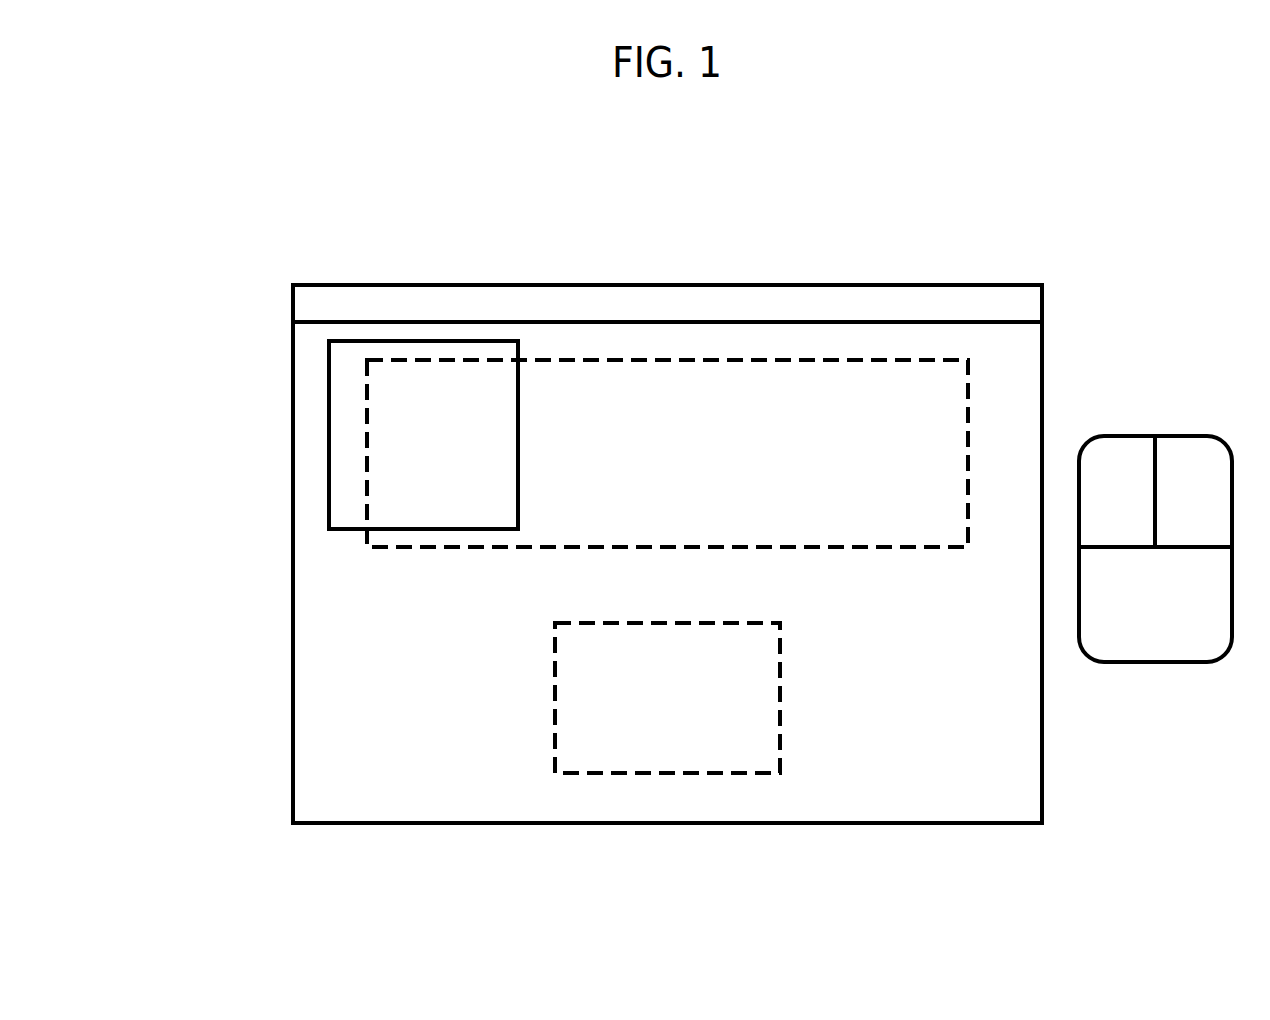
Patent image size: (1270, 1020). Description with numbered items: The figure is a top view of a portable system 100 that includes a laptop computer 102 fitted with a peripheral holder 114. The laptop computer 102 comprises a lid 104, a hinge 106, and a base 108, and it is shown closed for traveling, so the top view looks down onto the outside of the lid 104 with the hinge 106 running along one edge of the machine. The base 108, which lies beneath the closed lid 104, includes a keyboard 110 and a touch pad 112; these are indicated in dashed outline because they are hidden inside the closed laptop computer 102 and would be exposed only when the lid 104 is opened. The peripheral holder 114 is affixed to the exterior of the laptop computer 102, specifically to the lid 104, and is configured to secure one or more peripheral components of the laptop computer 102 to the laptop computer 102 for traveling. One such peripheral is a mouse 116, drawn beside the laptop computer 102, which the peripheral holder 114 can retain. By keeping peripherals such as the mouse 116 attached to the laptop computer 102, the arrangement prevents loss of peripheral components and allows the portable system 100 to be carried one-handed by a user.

The portable system 100 is at (949, 233).
The laptop computer 102 is at (291, 572).
The lid 104 is at (332, 682).
The hinge 106 is at (442, 284).
The base 108 is at (330, 737).
The keyboard 110 is at (823, 552).
The touch pad 112 is at (550, 693).
The peripheral holder 114 is at (328, 435).
The mouse 116 is at (1118, 432).